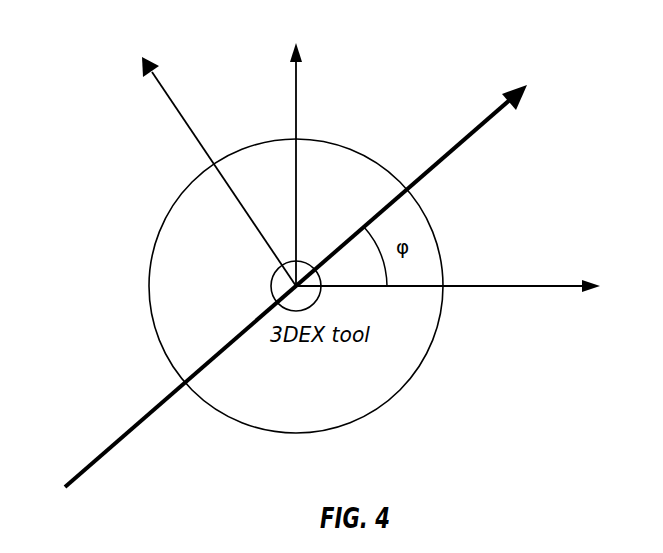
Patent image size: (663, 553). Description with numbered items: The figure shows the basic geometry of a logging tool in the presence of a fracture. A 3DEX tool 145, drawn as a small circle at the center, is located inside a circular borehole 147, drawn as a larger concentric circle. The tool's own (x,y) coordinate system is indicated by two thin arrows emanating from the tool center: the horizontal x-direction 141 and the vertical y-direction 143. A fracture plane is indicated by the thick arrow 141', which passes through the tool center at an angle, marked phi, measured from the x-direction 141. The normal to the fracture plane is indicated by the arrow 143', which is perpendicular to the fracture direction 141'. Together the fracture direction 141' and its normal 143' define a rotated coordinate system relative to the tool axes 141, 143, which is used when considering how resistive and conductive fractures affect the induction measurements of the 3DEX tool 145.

The x-direction of tool coordinate system 141 is at (448, 275).
The fracture plane direction 141' is at (296, 286).
The y-direction of tool coordinate system 143 is at (260, 164).
The normal to the fracture plane 143' is at (192, 171).
The 3DEX tool 145 is at (275, 280).
The borehole 147 is at (165, 272).